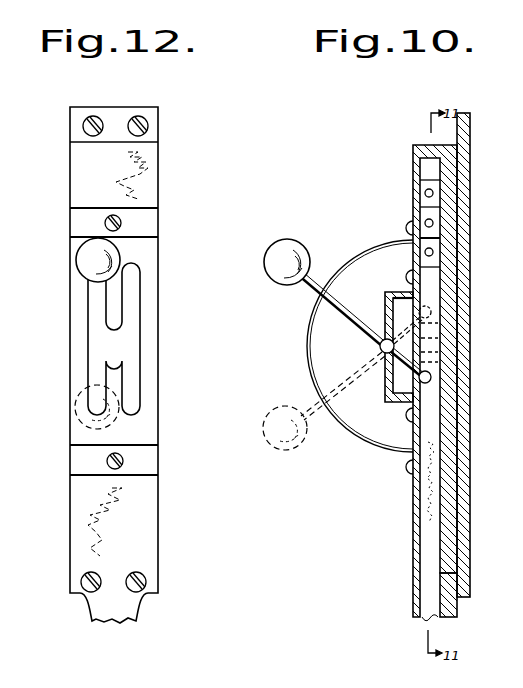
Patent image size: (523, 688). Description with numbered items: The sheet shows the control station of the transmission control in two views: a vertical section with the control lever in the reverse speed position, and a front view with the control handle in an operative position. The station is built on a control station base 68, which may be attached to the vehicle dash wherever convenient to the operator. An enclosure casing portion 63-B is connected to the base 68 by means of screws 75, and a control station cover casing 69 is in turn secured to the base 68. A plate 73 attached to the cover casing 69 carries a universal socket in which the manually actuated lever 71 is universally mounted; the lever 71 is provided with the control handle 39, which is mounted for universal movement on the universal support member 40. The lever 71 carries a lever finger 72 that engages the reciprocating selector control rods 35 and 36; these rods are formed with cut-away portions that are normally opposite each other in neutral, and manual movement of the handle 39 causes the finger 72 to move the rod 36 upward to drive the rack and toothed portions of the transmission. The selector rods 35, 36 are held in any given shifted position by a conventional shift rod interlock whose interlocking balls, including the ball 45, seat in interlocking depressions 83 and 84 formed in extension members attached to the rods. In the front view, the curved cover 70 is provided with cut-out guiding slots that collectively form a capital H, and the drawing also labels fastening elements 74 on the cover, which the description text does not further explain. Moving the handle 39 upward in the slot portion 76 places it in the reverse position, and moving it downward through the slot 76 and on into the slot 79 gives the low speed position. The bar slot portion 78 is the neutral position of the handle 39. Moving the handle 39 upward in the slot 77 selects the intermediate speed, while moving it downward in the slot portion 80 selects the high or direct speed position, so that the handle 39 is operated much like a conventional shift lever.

In FIG. 10, the selector control rod 35 is at (432, 277).
In FIG. 10, the selector control rod 36 is at (432, 536).
In FIG. 12, the control handle 39 is at (86, 254).
In FIG. 10, the control handle 39 is at (275, 261).
In FIG. 10, the universal support member 40 is at (380, 347).
In FIG. 10, the interlocking ball 45 is at (434, 222).
In FIG. 10, the enclosure casing portion 63-B is at (413, 597).
In FIG. 10, the control station base 68 is at (463, 407).
In FIG. 12, the control station cover casing 69 is at (147, 187).
In FIG. 10, the control station cover casing 69 is at (413, 167).
In FIG. 12, the curved cover 70 is at (150, 268).
In FIG. 10, the curved cover 70 is at (405, 224).
In FIG. 10, the manually actuated lever 71 is at (336, 301).
In FIG. 10, the lever finger 72 is at (431, 376).
In FIG. 10, the plate 73 is at (392, 292).
In FIG. 12, the screw 74 is at (121, 226).
In FIG. 10, the screw 74 is at (405, 468).
In FIG. 12, the screws 75 is at (84, 581).
In FIG. 10, the screws 75 is at (309, 350).
In FIG. 12, the slot portion 76 is at (98, 297).
In FIG. 12, the slot 77 is at (132, 300).
In FIG. 12, the bar slot portion 78 is at (113, 341).
In FIG. 12, the slot 79 is at (98, 367).
In FIG. 12, the slot portion 80 is at (132, 385).
In FIG. 10, the interlocking depression 83 is at (434, 193).
In FIG. 10, the interlocking depression 84 is at (434, 252).